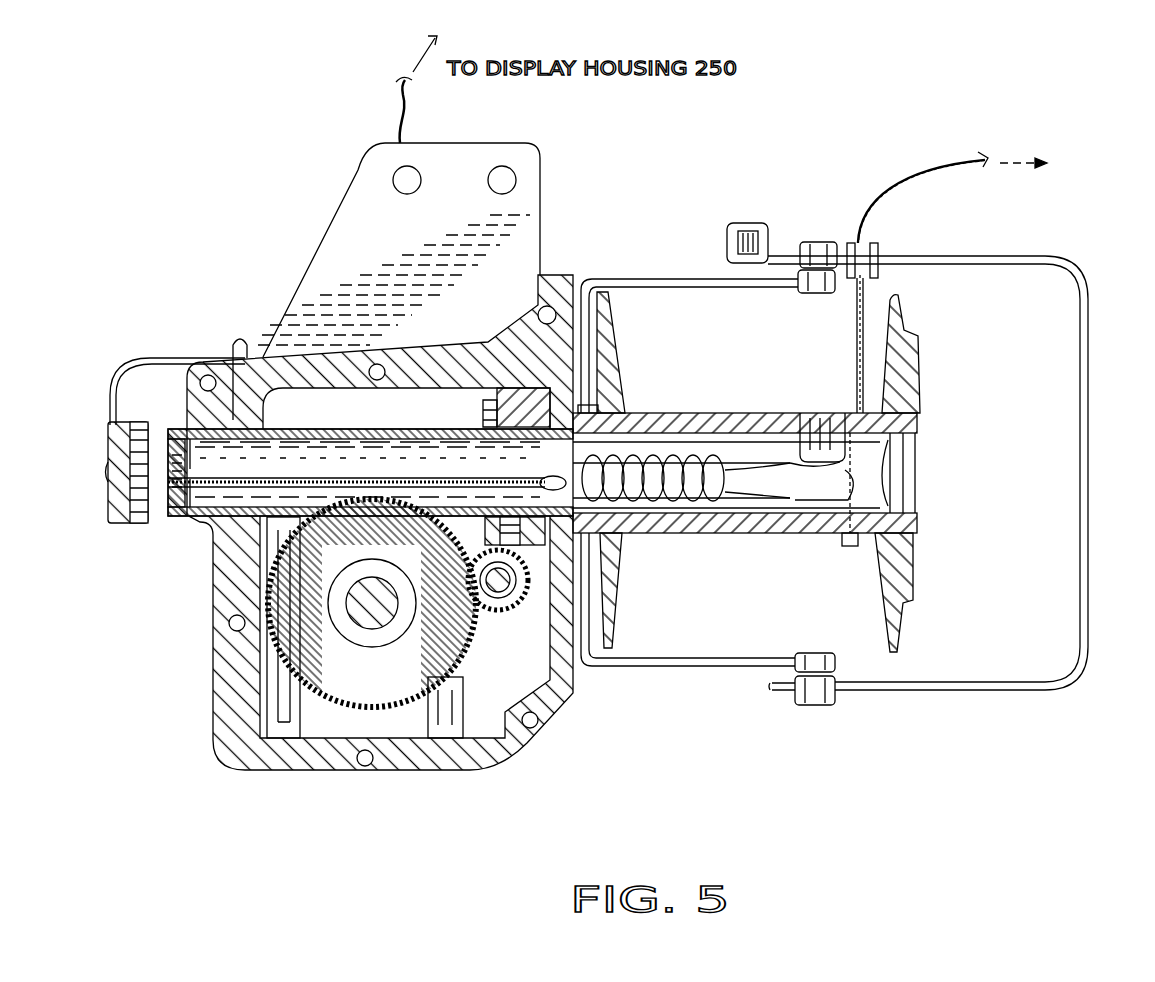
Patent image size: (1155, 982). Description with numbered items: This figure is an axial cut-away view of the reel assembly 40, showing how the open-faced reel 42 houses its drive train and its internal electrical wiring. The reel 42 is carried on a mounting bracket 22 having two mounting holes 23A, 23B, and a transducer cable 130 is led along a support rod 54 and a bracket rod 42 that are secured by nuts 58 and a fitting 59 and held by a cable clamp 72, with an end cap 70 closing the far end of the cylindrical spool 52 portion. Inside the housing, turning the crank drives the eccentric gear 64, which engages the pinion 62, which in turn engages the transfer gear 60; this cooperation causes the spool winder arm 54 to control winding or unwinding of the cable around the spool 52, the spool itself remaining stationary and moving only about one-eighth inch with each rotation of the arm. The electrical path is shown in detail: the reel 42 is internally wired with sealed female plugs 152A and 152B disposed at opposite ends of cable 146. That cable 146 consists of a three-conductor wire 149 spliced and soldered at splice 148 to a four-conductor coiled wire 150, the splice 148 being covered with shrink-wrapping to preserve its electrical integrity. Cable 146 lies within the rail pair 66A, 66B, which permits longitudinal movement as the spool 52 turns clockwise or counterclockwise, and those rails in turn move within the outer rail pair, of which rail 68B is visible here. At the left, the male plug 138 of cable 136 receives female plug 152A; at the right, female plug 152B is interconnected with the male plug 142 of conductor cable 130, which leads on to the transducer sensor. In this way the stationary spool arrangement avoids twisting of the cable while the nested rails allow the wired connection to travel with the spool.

The mounting bracket 22 is at (310, 262).
The mounting hole 23A is at (393, 182).
The mounting hole 23B is at (512, 178).
The reel assembly 40 is at (683, 215).
The reel 42 is at (977, 690).
The spool 52 is at (655, 412).
The spool winder arm 54 is at (665, 279).
The nuts 58 is at (795, 690).
The fitting 59 is at (747, 223).
The transfer gear 60 is at (500, 388).
The pinion 62 is at (512, 597).
The eccentric gear 64 is at (322, 657).
The rail 66A is at (318, 442).
The rail 66B is at (228, 500).
The rail 68B is at (474, 530).
The end cap 70 is at (920, 478).
The cable clamp 72 is at (855, 410).
The conductor cable 130 is at (882, 222).
The cable 136 is at (396, 112).
The male plug 138 is at (152, 500).
The male plug 142 is at (805, 413).
The cable 146 is at (383, 478).
The splice 148 is at (565, 478).
The 3-conductor wire 149 is at (290, 470).
The 4-conductor coiled wire 150 is at (718, 522).
The female plug 152A is at (185, 507).
The female plug 152B is at (840, 462).